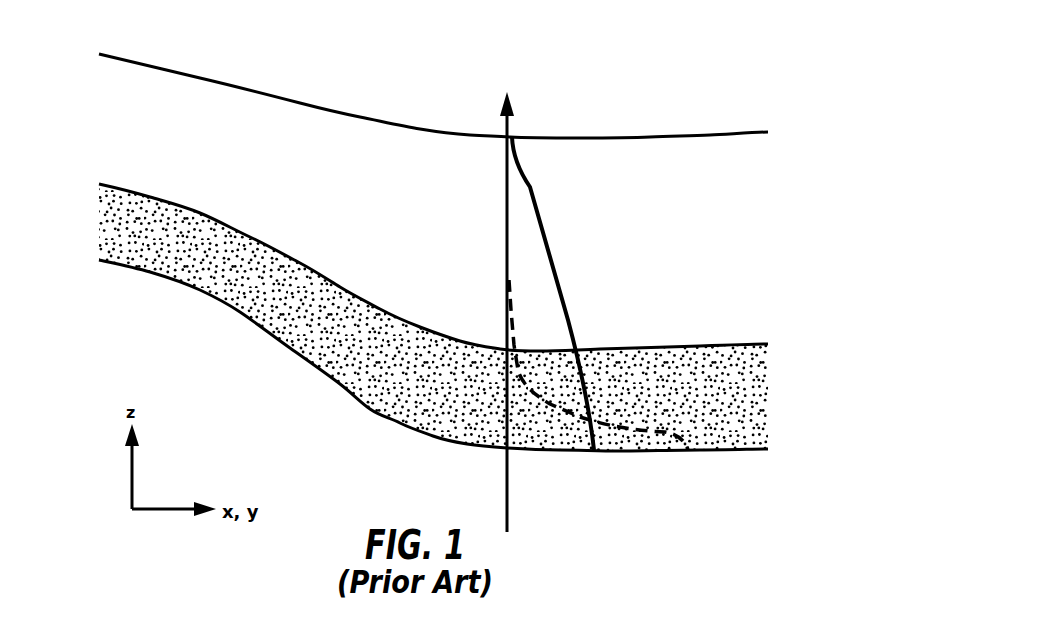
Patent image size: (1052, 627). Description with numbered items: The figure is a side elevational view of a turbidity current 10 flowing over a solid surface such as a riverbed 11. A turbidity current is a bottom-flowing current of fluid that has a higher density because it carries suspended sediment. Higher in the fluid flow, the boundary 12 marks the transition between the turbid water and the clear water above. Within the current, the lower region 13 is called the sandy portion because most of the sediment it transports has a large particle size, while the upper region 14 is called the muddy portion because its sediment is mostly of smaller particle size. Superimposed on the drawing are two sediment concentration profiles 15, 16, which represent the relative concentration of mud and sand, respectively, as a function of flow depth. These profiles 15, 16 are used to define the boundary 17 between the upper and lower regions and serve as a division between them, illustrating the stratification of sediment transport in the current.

The turbidity current 10 is at (122, 29).
The riverbed 11 is at (345, 390).
The boundary between turbid water and clear water 12 is at (340, 110).
The lower region 13 is at (103, 225).
The upper region 14 is at (103, 118).
The sediment concentration profile 15 is at (548, 243).
The sediment concentration profile 16 is at (660, 432).
The boundary 17 is at (652, 348).